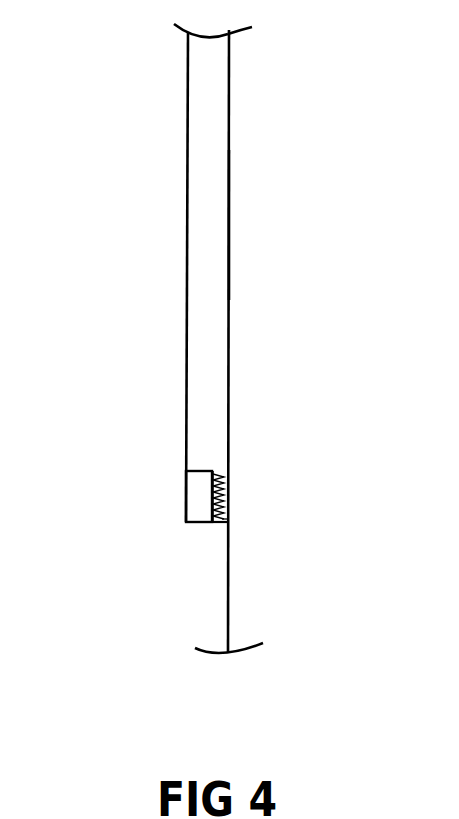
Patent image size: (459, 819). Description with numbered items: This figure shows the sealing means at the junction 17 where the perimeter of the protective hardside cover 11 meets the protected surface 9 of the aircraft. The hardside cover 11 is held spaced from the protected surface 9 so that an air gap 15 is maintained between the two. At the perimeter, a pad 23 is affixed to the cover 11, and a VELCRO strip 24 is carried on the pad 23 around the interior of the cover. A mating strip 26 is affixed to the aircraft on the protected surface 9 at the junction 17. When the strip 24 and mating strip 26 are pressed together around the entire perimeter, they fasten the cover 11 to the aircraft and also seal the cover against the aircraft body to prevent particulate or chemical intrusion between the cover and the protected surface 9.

The protected surface 9 is at (229, 227).
The hardside cover 11 is at (187, 285).
The air gap 15 is at (210, 118).
The junction 17 is at (228, 497).
The pad 23 is at (197, 495).
The VELCRO strip 24 is at (213, 525).
The mating strip 26 is at (223, 525).